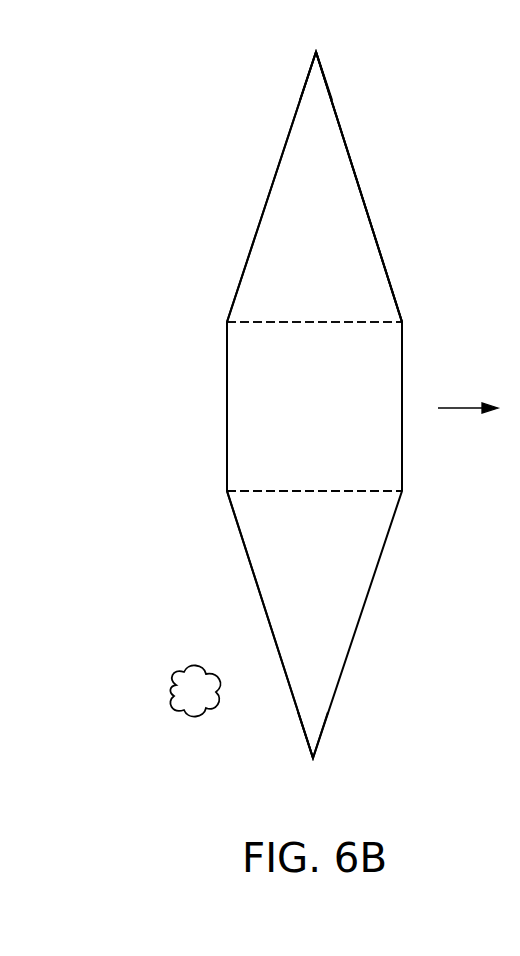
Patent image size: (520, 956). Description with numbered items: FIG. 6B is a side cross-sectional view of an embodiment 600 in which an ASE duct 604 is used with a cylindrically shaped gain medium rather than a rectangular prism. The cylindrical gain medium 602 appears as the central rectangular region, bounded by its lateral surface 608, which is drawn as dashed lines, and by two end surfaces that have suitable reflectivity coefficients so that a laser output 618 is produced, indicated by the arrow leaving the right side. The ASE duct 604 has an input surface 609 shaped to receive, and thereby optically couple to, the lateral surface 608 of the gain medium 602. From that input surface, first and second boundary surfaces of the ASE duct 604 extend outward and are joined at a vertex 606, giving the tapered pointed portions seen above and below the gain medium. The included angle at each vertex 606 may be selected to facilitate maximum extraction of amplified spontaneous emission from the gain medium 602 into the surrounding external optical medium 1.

The external optical medium 1 is at (201, 710).
The embodiment 600 is at (287, 806).
The cylindrical gain medium 602 is at (339, 414).
The ASE duct 604 is at (331, 103).
The vertex 606 is at (316, 52).
The lateral surface 608 is at (367, 323).
The input surface 609 is at (348, 491).
The laser output 618 is at (456, 409).